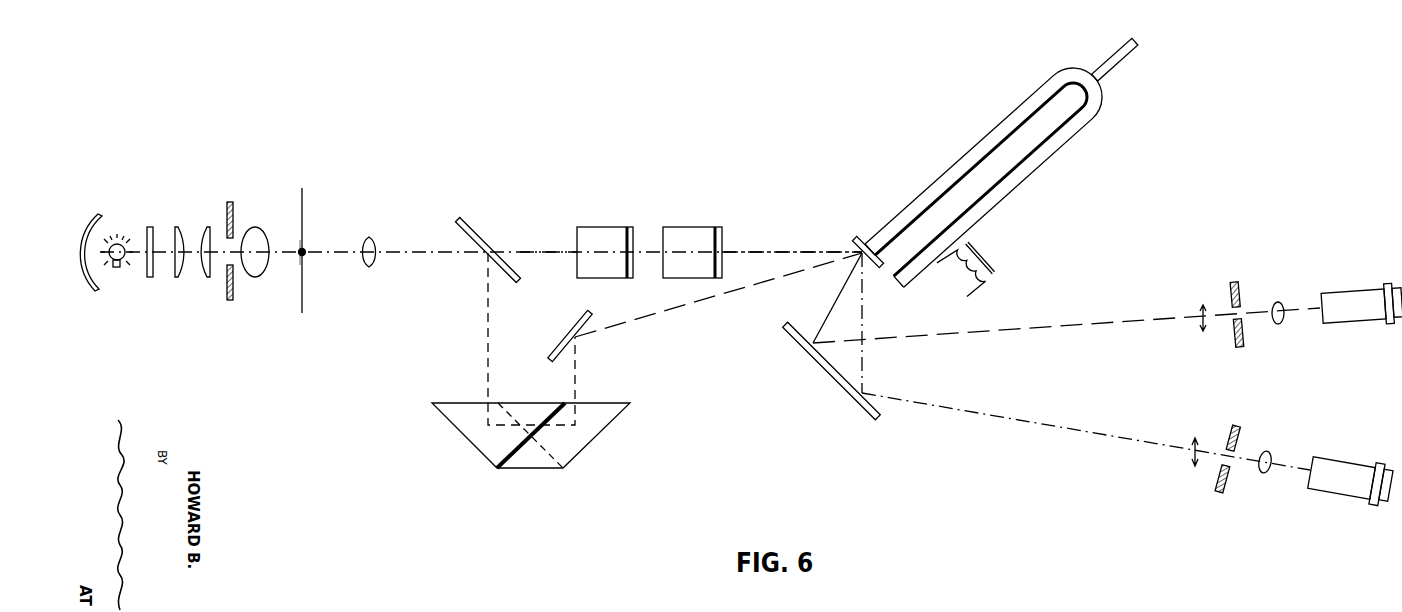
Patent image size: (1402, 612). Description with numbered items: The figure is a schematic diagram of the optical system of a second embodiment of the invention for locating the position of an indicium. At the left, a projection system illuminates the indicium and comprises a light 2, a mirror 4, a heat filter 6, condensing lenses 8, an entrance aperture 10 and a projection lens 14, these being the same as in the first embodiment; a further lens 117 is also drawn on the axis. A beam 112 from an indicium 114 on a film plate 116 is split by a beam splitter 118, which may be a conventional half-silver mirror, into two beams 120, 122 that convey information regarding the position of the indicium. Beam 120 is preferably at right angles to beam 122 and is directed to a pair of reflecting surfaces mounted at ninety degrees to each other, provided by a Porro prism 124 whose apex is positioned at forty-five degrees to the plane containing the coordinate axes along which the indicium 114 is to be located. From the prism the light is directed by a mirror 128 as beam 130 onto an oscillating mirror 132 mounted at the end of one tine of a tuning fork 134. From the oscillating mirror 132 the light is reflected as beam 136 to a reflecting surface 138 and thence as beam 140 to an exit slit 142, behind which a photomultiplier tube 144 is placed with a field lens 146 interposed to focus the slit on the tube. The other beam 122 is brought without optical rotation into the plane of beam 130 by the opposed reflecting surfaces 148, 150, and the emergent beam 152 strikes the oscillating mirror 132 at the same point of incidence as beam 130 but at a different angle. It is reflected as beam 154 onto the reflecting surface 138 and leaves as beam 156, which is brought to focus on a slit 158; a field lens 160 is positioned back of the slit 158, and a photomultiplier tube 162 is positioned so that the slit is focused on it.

The light 2 is at (119, 243).
The mirror 4 is at (103, 213).
The heat filter 6 is at (153, 231).
The condensing lenses 8 is at (188, 276).
The entrance aperture 10 is at (227, 294).
The projection lens 14 is at (256, 226).
The beam 112 is at (339, 248).
The indicium 114 is at (300, 262).
The film plate 116 is at (305, 292).
The lens 117 is at (374, 260).
The beam splitter 118 is at (469, 220).
The beam 120 is at (487, 355).
The beam 122 is at (550, 250).
The Porro prism 124 is at (467, 442).
The mirror 128 is at (578, 319).
The beam 130 is at (657, 315).
The oscillating mirror 132 is at (858, 240).
The tuning fork 134 is at (1027, 171).
The beam 136 is at (834, 310).
The reflecting surface 138 is at (814, 370).
The beam 140 is at (1116, 318).
The exit slit 142 is at (1232, 338).
The photomultiplier tube 144 is at (1356, 298).
The field lens 146 is at (1276, 323).
The reflecting surface 148 is at (600, 230).
The reflecting surface 150 is at (700, 230).
The emergent beam 152 is at (792, 251).
The beam 154 is at (867, 330).
The beam 156 is at (1004, 413).
The slit 158 is at (1215, 478).
The field lens 160 is at (1266, 473).
The photomultiplier tube 162 is at (1356, 440).